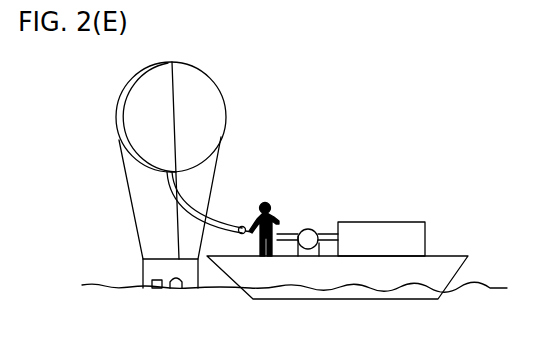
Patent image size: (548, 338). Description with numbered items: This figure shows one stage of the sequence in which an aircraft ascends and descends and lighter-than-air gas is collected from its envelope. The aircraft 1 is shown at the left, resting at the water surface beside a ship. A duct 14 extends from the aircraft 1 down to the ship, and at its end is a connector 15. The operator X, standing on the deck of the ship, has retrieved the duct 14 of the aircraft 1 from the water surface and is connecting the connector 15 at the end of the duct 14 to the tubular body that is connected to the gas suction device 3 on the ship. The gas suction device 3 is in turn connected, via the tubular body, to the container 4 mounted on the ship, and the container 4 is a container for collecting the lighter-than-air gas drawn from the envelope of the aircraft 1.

The aircraft 1 is at (228, 80).
The duct 14 is at (215, 226).
The connector 15 is at (242, 226).
The operator X is at (279, 219).
The gas suction device 3 is at (312, 228).
The container 4 is at (391, 222).